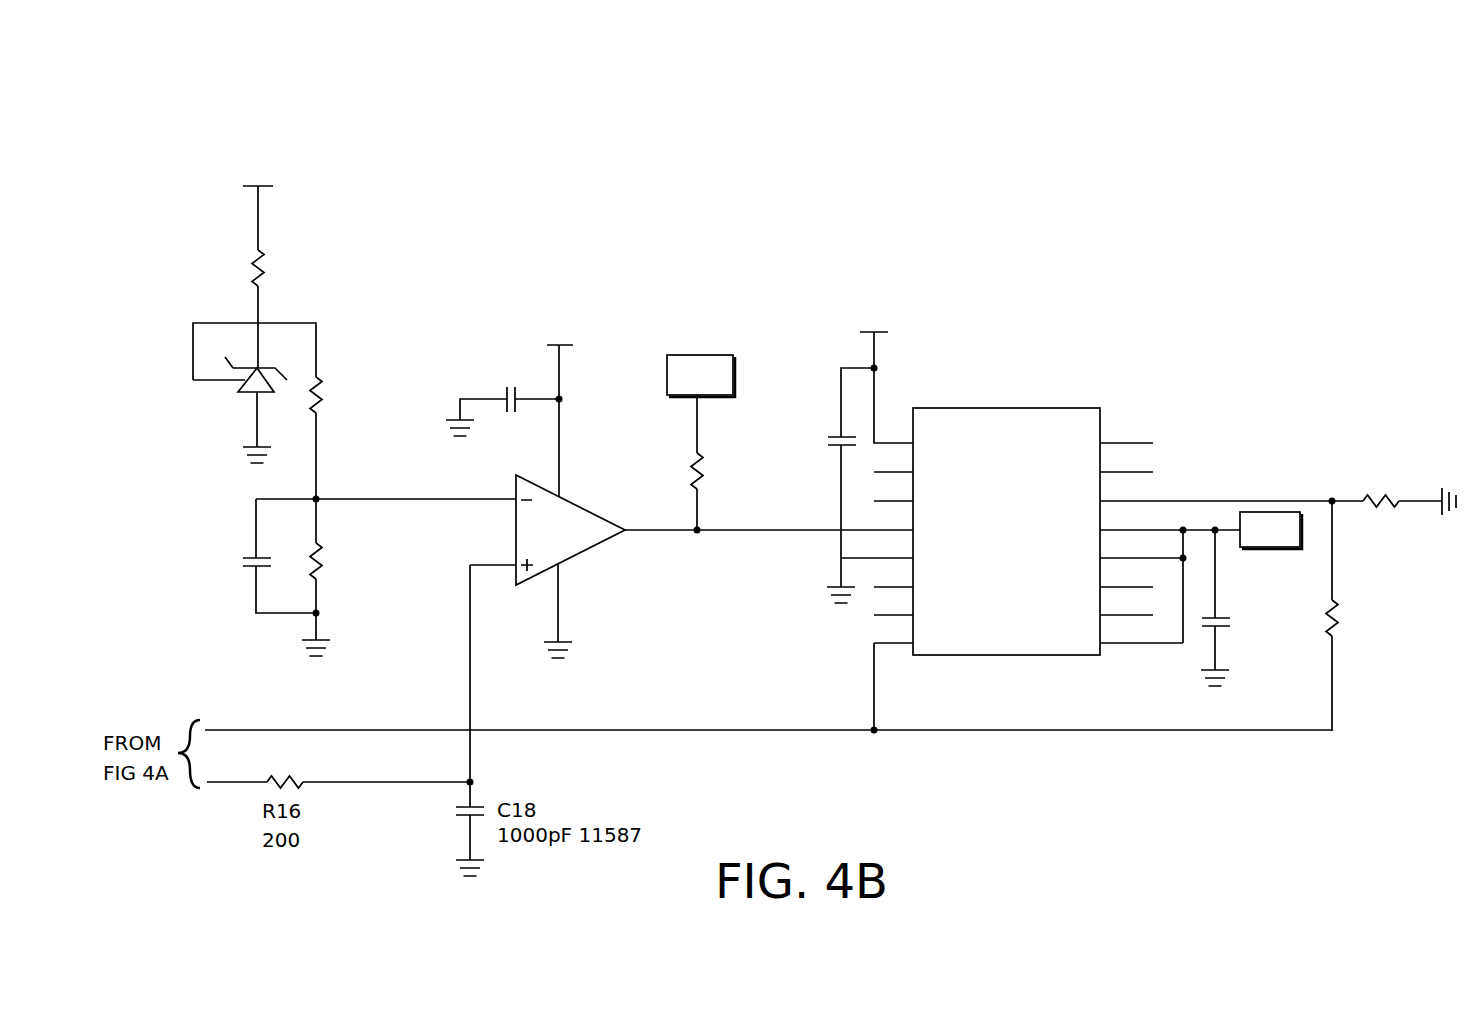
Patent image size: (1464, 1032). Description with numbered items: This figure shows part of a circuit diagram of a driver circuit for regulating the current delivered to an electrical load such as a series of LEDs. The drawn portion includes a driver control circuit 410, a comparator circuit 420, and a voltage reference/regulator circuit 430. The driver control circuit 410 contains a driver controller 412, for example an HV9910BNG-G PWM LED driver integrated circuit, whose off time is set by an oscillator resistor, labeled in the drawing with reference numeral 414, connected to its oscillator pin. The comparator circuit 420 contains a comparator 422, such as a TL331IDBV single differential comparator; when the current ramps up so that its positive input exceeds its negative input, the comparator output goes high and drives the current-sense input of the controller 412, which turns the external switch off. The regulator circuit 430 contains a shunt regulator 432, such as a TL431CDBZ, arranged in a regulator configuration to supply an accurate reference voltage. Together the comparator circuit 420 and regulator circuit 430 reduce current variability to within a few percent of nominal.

The driver control circuit 410 is at (1438, 273).
The driver controller 412 is at (1100, 408).
The resistor R1 414 is at (1334, 628).
The comparator circuit 420 is at (743, 273).
The comparator 422 is at (562, 567).
The voltage reference/regulator circuit 430 is at (178, 125).
The shunt regulator 432 is at (246, 385).